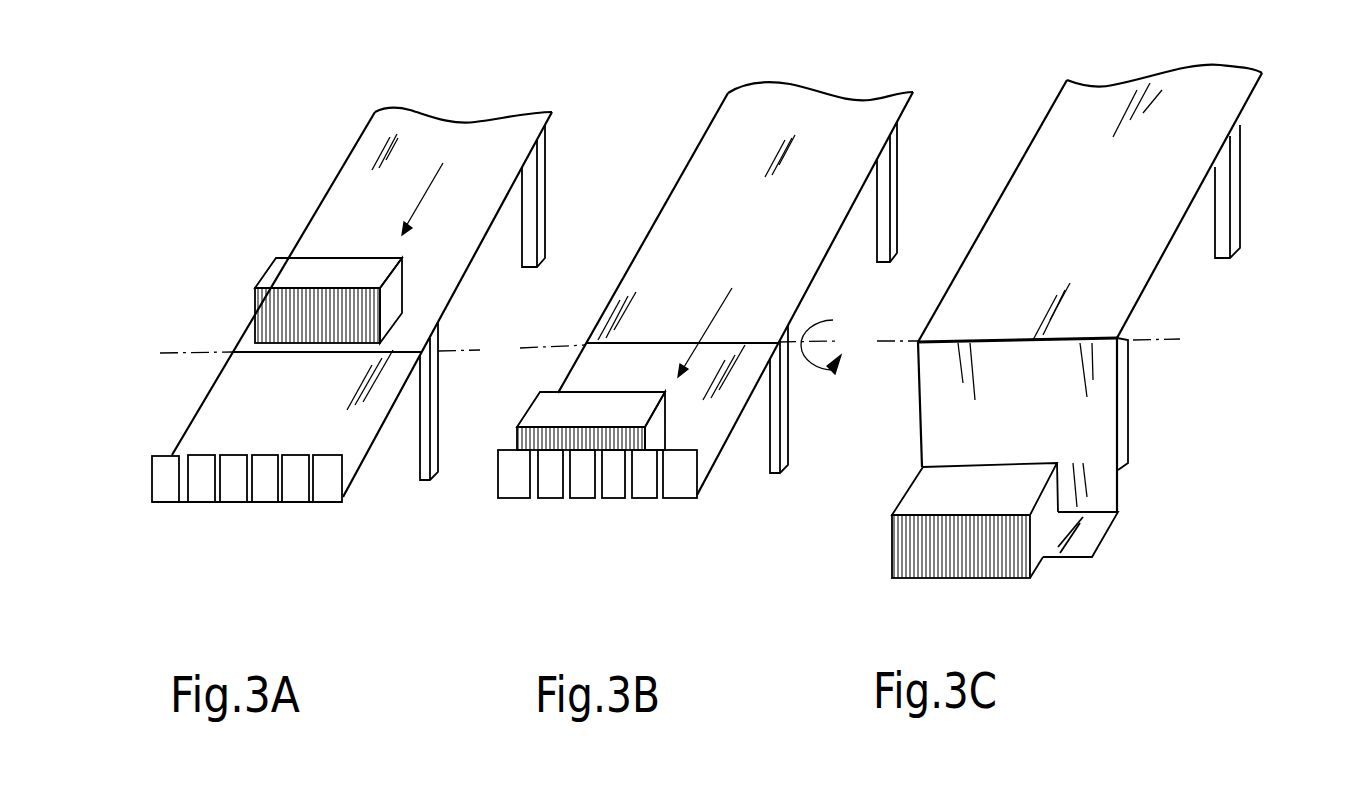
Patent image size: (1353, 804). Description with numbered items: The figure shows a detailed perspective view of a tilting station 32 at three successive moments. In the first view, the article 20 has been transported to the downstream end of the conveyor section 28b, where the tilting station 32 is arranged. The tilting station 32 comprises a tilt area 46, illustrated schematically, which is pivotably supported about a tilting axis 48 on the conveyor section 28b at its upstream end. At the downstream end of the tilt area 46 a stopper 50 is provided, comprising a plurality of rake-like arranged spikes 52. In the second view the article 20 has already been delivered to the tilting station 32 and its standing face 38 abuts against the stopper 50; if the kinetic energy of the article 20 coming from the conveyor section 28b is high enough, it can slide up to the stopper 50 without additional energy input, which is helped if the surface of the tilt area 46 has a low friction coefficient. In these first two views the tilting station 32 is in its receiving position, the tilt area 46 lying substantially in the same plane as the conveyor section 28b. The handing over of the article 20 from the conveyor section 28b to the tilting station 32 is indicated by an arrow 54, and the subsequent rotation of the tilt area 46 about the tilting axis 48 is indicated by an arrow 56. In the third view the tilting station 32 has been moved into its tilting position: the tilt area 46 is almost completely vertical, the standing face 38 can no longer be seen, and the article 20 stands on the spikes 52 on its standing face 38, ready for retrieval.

In FIG. 3A, the conveyor section 28b is at (335, 178).
In FIG. 3C, the conveyor section 28b is at (1160, 268).
In FIG. 3A, the tilting axis 48 is at (197, 350).
In FIG. 3A, the stopper 50 is at (191, 534).
In FIG. 3A, the spikes 52 is at (250, 478).
In FIG. 3C, the spikes 52 is at (1117, 530).
In FIG. 3A, the tilting station 32 is at (338, 511).
In FIG. 3A, the tilt area 46 is at (365, 398).
In FIG. 3B, the arrow 54 is at (710, 325).
In FIG. 3B, the standing face 38 is at (503, 433).
In FIG. 3C, the standing face 38 is at (975, 581).
In FIG. 3B, the arrow 56 is at (823, 308).
In FIG. 3C, the article 20 is at (892, 540).